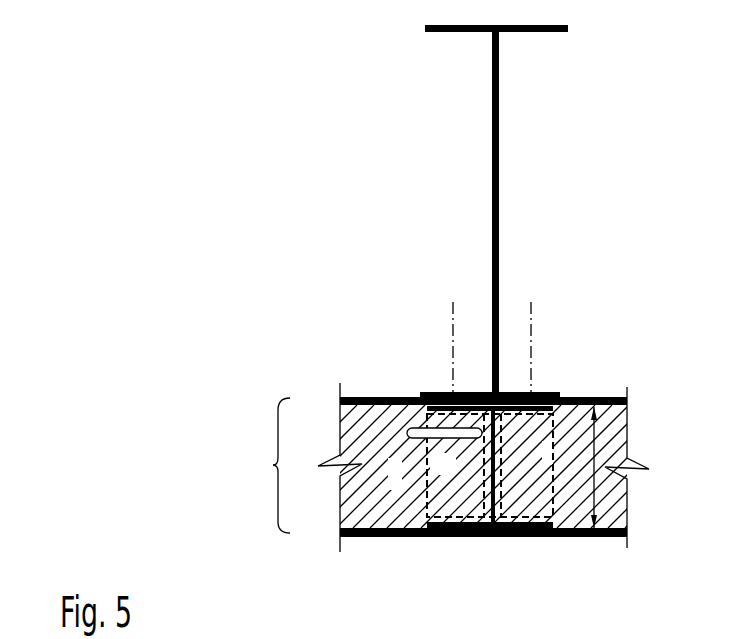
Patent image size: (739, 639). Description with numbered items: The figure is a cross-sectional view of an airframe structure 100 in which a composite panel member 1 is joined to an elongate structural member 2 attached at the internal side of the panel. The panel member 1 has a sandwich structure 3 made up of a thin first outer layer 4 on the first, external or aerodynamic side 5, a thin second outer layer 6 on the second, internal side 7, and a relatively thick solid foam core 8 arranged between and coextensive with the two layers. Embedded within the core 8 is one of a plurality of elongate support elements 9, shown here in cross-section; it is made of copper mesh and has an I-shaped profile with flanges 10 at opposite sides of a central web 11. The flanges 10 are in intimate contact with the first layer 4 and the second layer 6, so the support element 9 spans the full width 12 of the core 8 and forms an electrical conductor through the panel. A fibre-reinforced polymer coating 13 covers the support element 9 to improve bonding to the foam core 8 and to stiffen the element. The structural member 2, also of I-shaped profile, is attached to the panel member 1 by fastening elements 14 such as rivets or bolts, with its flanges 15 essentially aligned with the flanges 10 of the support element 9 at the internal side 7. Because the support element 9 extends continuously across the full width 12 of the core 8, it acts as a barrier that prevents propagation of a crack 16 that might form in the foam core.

The airframe structure 100 is at (444, 209).
The panel member 1 is at (360, 566).
The structural member 2 is at (524, 123).
The sandwich structure 3 is at (271, 465).
The first outer layer 4 is at (349, 502).
The first side 5 is at (588, 566).
The second outer layer 6 is at (330, 387).
The second side 7 is at (603, 371).
The core 8 is at (400, 487).
The support element 9 is at (552, 382).
The flanges 10 is at (453, 537).
The central web 11 is at (490, 472).
The full width 12 is at (597, 445).
The coating 13 is at (531, 502).
The fastening elements 14 is at (453, 310).
The flanges 15 is at (435, 377).
The crack 16 is at (417, 426).